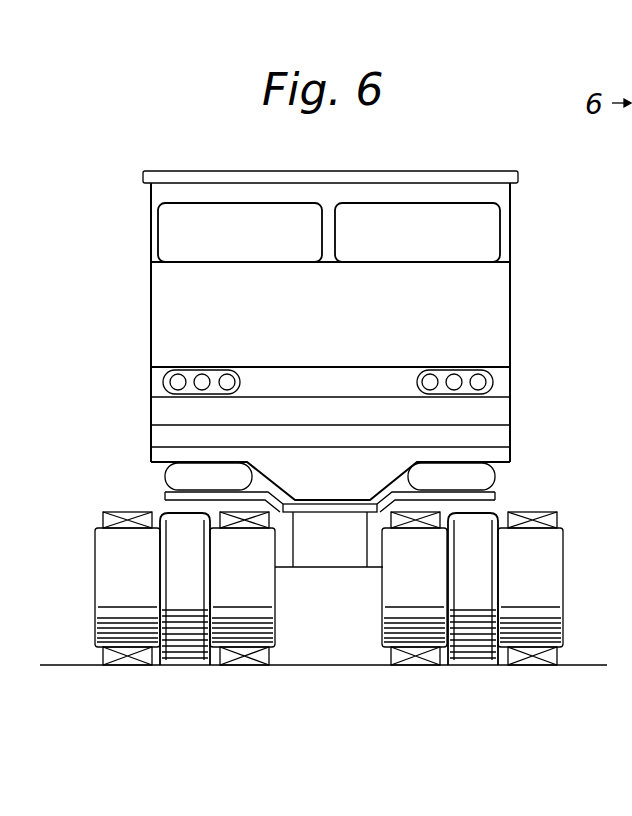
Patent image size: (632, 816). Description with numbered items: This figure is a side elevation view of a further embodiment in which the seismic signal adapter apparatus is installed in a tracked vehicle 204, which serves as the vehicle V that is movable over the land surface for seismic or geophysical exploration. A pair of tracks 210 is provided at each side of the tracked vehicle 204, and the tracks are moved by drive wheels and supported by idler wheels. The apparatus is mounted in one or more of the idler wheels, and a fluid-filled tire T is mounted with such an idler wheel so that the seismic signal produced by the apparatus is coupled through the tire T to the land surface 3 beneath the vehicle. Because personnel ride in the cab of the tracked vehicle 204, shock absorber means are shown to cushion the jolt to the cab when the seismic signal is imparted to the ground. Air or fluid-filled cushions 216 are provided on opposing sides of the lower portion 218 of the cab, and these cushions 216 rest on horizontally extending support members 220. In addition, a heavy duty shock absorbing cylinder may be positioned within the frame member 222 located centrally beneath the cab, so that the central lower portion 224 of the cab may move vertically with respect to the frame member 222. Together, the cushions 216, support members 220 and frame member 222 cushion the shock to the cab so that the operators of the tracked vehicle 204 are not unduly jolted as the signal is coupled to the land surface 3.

The vehicle V is at (427, 166).
The tracked vehicle 204 is at (516, 301).
The central lower portion 224 is at (332, 478).
The lower portion 218 is at (151, 465).
The air or fluid-filled cushions 216 is at (495, 480).
The horizontally extending support members 220 is at (165, 497).
The frame member 222 is at (340, 550).
The tracks 210 is at (128, 662).
The fluid-filled tire T is at (188, 667).
The ground surface 3 is at (579, 665).